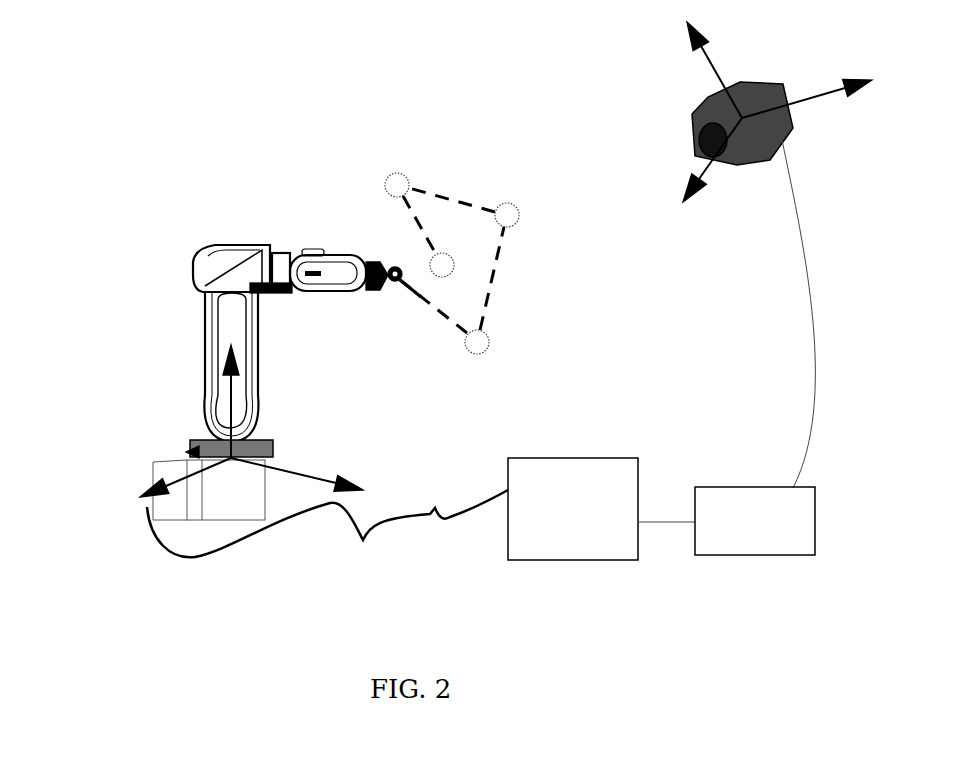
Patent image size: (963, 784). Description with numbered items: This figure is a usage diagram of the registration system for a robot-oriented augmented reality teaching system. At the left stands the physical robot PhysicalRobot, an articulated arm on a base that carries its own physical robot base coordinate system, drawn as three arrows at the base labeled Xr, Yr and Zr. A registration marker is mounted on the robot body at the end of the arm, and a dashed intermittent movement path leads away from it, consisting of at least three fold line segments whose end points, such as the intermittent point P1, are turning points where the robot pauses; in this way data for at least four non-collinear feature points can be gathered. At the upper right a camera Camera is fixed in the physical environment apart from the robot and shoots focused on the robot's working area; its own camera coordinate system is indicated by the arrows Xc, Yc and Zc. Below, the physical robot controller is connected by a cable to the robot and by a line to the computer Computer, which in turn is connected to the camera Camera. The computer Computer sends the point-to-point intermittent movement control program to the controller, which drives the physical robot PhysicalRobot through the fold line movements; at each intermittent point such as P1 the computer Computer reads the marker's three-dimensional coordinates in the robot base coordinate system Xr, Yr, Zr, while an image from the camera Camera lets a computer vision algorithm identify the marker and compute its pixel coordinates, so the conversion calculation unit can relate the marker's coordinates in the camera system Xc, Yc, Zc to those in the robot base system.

The physical robot PhysicalRobot is at (206, 354).
The intermittent point P1 is at (522, 209).
The camera Camera is at (777, 244).
The computer Computer is at (755, 521).
The X axis of physical robot base coordinate system Xr is at (185, 491).
The Y axis of physical robot base coordinate system Yr is at (297, 474).
The Z axis of physical robot base coordinate system Zr is at (242, 401).
The X axis of camera coordinate system Xc is at (712, 163).
The Y axis of camera coordinate system Yc is at (807, 91).
The Z axis of camera coordinate system Zc is at (714, 59).